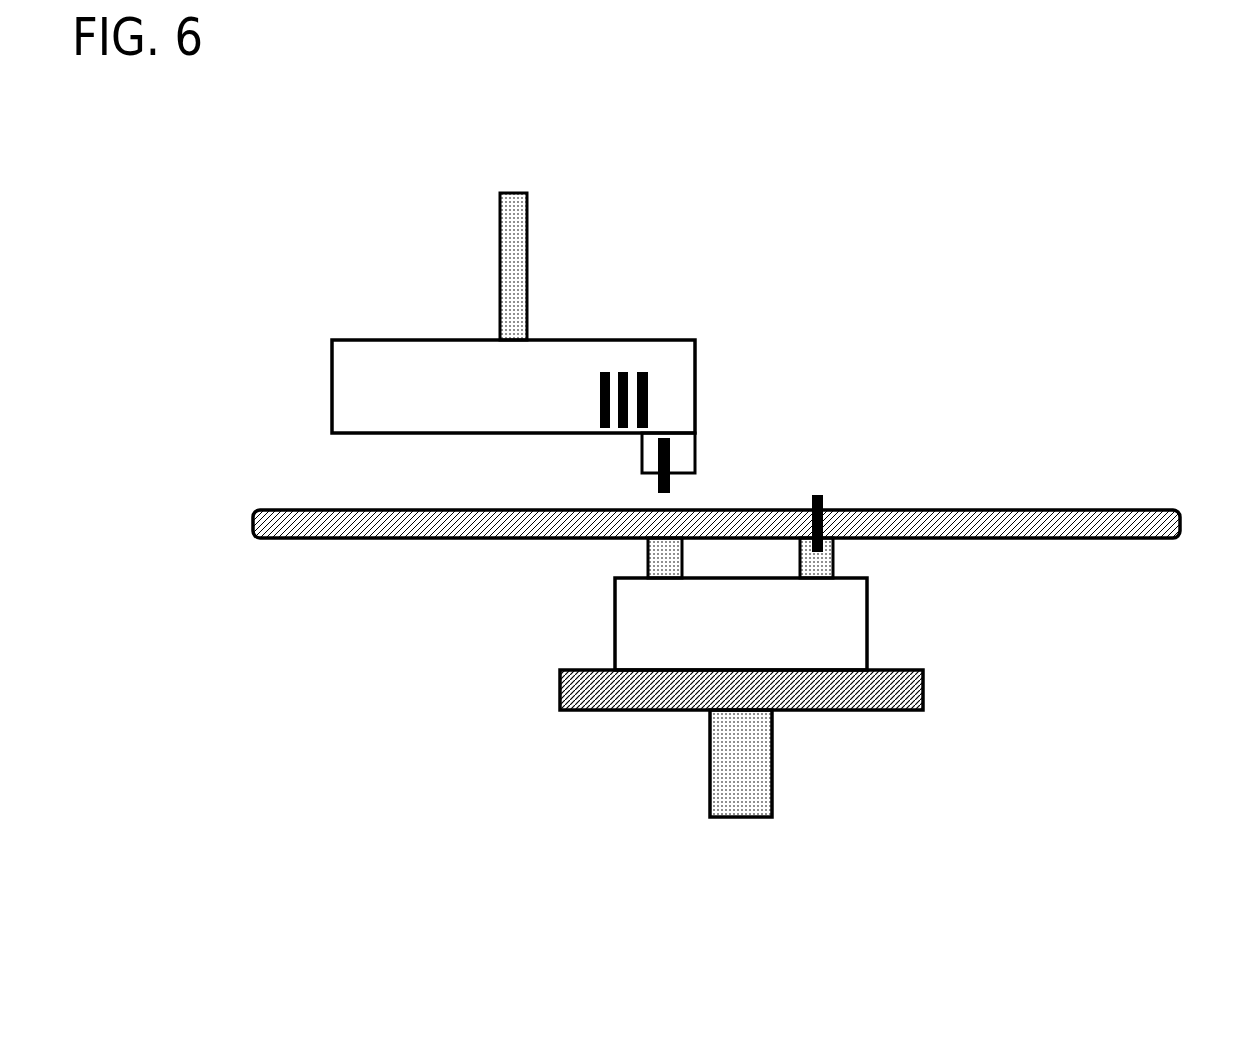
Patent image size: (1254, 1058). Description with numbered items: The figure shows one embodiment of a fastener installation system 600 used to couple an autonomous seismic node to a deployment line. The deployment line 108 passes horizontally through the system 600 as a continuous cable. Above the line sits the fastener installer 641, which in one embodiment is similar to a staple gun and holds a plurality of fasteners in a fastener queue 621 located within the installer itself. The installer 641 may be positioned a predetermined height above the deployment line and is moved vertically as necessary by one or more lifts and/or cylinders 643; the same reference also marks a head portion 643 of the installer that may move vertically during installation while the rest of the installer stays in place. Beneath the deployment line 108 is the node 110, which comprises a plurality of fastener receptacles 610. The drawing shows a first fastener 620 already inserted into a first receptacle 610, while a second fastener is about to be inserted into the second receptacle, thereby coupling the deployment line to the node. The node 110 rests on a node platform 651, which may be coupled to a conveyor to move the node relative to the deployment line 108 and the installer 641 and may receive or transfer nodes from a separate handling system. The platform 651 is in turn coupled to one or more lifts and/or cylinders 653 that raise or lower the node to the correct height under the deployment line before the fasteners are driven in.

The fastener installation system 600 is at (972, 115).
The deployment line 108 is at (1130, 545).
The fastener installer 641 is at (683, 335).
The lifts and/or cylinders 643 is at (523, 188).
The fastener queue 621 is at (655, 397).
The fastener 620 is at (825, 502).
The fastener receptacle 610 is at (640, 555).
The node 110 is at (853, 638).
The node platform 651 is at (577, 715).
The lifts and/or cylinders 653 is at (715, 818).